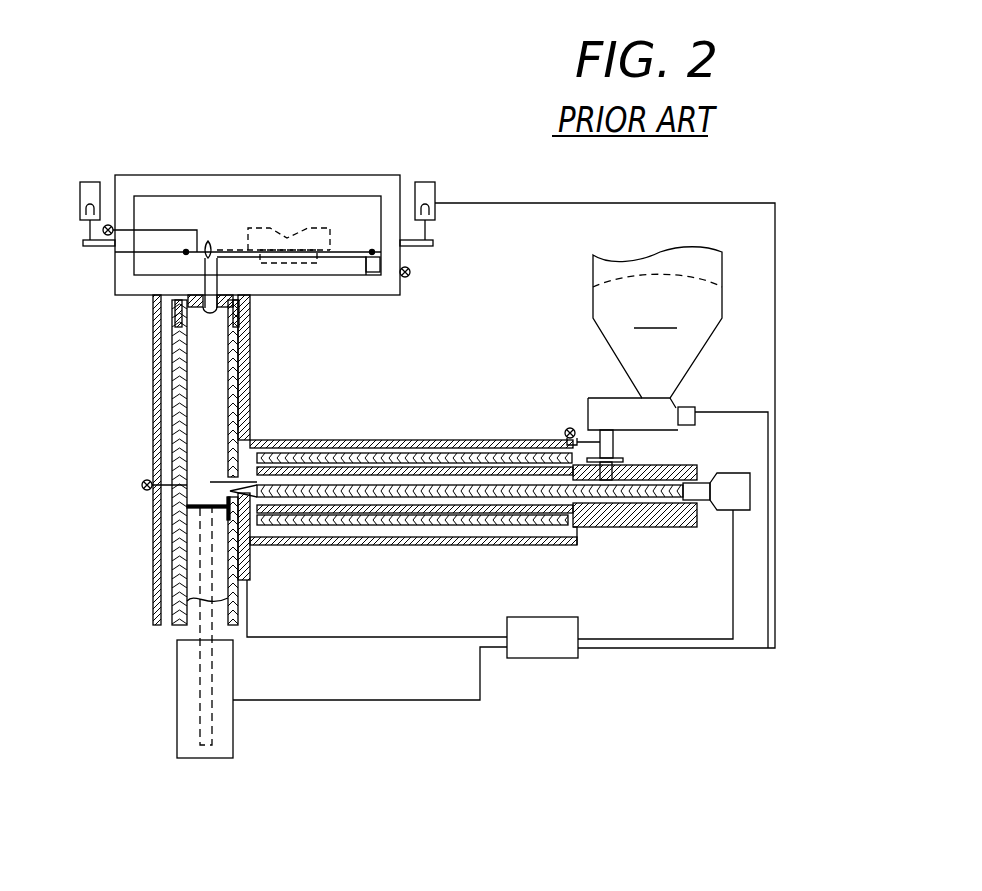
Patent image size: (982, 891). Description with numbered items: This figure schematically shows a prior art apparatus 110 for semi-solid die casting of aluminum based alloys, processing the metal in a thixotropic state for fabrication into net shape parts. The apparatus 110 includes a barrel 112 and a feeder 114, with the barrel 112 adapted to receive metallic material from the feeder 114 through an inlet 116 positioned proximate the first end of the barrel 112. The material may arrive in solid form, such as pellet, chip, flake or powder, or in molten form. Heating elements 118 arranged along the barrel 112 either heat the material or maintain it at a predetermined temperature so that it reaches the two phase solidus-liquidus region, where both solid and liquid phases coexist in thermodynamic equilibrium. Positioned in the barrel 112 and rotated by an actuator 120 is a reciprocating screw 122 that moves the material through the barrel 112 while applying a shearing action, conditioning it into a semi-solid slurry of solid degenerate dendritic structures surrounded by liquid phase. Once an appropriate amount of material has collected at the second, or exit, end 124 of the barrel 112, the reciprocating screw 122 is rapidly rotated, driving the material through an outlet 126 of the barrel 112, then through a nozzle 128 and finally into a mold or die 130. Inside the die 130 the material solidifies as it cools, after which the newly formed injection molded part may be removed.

The prior art apparatus 110 is at (235, 88).
The barrel 112 is at (452, 463).
The feeder 114 is at (655, 338).
The inlet 116 is at (607, 448).
The heating elements 118 is at (316, 518).
The actuator 120 is at (737, 492).
The reciprocating screw 122 is at (488, 490).
The second (exit) end 124 is at (250, 488).
The outlet 126 is at (278, 460).
The nozzle 128 is at (192, 296).
The mold or die 130 is at (353, 220).